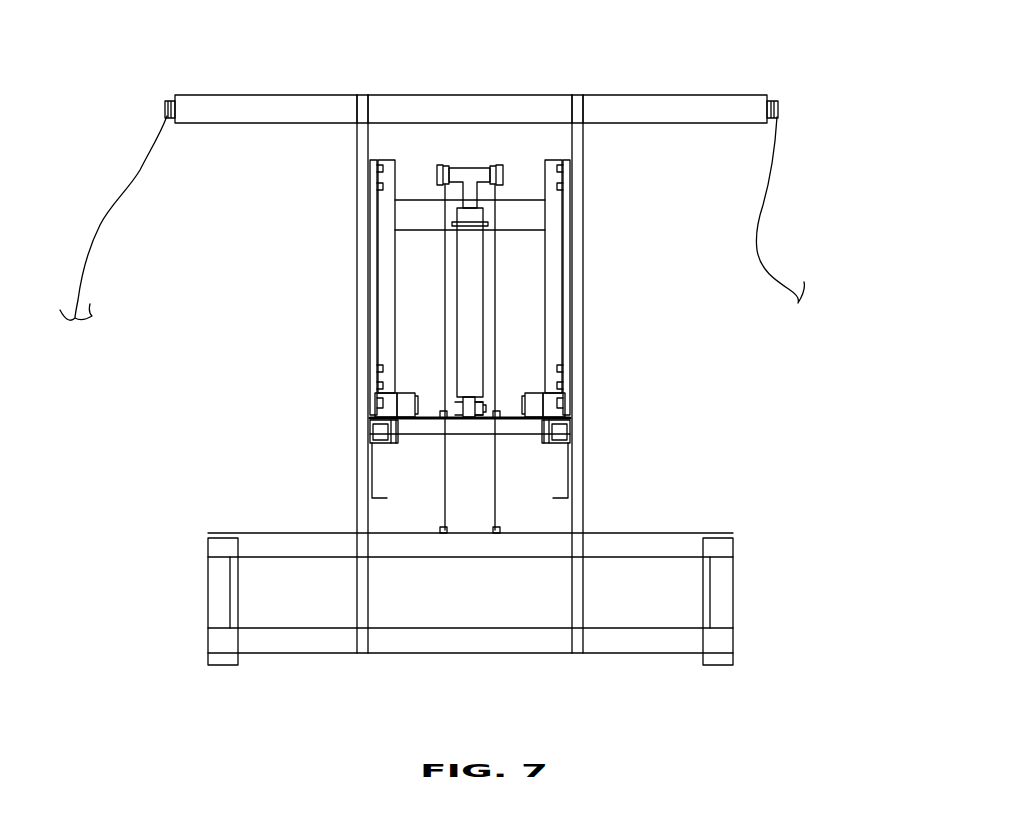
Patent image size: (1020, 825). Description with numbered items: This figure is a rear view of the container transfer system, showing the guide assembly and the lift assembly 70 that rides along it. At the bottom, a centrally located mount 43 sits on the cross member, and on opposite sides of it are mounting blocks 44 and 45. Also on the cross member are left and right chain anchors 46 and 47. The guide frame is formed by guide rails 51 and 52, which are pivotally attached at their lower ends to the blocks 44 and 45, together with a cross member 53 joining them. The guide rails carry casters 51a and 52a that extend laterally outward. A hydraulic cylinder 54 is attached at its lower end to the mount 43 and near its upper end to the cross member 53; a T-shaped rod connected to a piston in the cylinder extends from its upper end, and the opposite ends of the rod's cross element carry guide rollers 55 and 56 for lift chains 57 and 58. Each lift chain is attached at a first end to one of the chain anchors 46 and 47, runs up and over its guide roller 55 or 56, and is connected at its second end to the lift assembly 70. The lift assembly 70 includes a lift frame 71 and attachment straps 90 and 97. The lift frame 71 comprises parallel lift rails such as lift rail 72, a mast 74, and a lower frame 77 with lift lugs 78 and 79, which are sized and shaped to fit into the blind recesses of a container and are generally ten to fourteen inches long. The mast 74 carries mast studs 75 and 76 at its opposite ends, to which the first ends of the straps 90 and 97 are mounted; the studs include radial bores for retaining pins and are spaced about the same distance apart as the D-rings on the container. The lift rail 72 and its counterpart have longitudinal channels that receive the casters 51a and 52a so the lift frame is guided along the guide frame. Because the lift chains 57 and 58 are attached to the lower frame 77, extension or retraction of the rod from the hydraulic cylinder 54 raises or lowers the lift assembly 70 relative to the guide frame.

The lift assembly 70 is at (700, 103).
The lift frame 71 is at (622, 104).
The lift rail 72 is at (360, 337).
The mast 74 is at (285, 105).
The mast stud 75 is at (165, 110).
The mast stud 76 is at (780, 108).
The lower frame 77 is at (642, 548).
The lift lug 78 is at (222, 660).
The lift lug 79 is at (722, 660).
The attachment strap 90 is at (107, 213).
The attachment strap 97 is at (760, 222).
The guide rail 51 is at (387, 258).
The caster 51a is at (370, 180).
The guide rail 52 is at (565, 270).
The caster 52a is at (572, 183).
The cross member 53 is at (517, 212).
The hydraulic cylinder 54 is at (467, 173).
The guide roller 55 is at (437, 173).
The guide roller 56 is at (497, 169).
The mount 43 is at (478, 407).
The mounting block 44 is at (408, 402).
The mounting block 45 is at (527, 405).
The chain anchor 46 is at (443, 418).
The chain anchor 47 is at (495, 418).
The lift chain 57 is at (443, 512).
The lift chain 58 is at (495, 512).